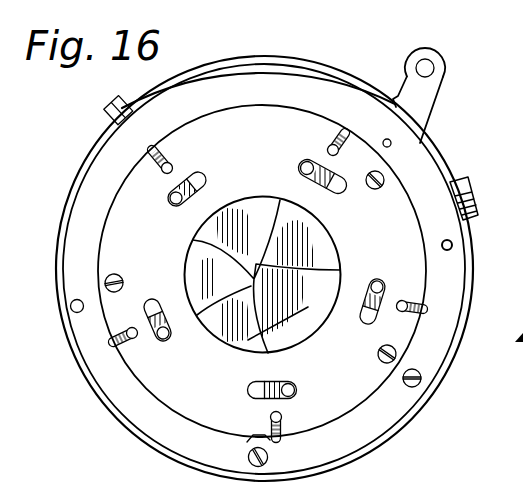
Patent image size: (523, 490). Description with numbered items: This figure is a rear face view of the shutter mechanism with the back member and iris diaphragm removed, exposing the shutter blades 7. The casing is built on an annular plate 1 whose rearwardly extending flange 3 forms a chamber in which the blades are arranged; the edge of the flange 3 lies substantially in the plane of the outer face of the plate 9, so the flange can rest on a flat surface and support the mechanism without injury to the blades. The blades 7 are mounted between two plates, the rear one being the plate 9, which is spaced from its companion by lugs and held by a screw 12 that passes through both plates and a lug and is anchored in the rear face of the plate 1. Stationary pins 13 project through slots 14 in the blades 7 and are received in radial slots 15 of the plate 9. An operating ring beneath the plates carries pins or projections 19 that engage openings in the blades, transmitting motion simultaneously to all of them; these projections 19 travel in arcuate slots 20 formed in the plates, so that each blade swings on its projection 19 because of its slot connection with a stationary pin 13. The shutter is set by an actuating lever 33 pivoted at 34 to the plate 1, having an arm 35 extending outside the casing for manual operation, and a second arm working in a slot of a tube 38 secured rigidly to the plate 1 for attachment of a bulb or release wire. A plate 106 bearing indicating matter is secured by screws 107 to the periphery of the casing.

The annular plate 1 is at (108, 168).
The rearwardly extending flange 3 is at (78, 187).
The shutter blades 7 is at (322, 263).
The plate 9 is at (110, 245).
The screw 12 is at (106, 287).
The pins 13 is at (137, 337).
The slots 14 is at (120, 344).
The radial slots 15 is at (330, 136).
The pins or projections 19 is at (313, 183).
The arcuate slots 20 is at (342, 188).
The setting or actuating lever 33 is at (451, 249).
The pivot 34 is at (391, 143).
The arm 35 is at (427, 104).
The tube 38 is at (463, 190).
The plate 106 is at (335, 58).
The screws 107 is at (112, 101).